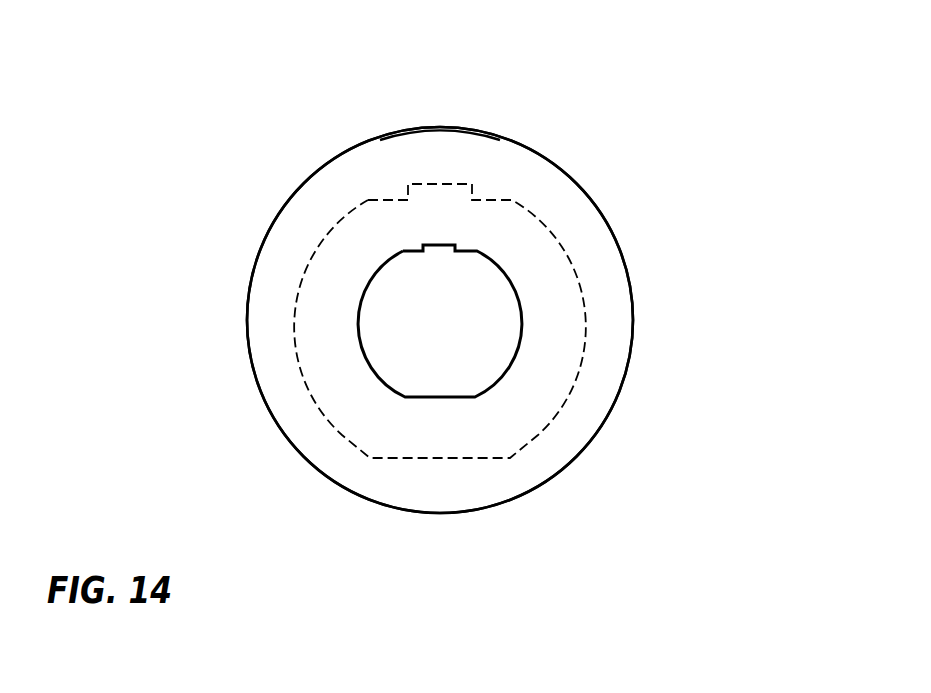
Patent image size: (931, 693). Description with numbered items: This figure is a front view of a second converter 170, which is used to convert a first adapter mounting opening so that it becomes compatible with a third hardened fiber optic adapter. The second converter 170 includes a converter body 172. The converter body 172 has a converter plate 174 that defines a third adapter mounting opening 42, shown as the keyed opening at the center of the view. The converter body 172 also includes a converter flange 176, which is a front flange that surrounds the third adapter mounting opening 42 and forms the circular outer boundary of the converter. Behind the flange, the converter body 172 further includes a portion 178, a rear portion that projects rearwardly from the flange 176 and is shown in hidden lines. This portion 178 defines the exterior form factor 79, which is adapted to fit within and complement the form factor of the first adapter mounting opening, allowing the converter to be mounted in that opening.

The second converter 170 is at (603, 95).
The converter body 172 is at (430, 127).
The converter plate 174 is at (548, 362).
The converter flange 176 is at (302, 182).
The portion 178 is at (320, 415).
The exterior form factor 79 is at (361, 355).
The third adapter mounting opening 42 is at (492, 263).